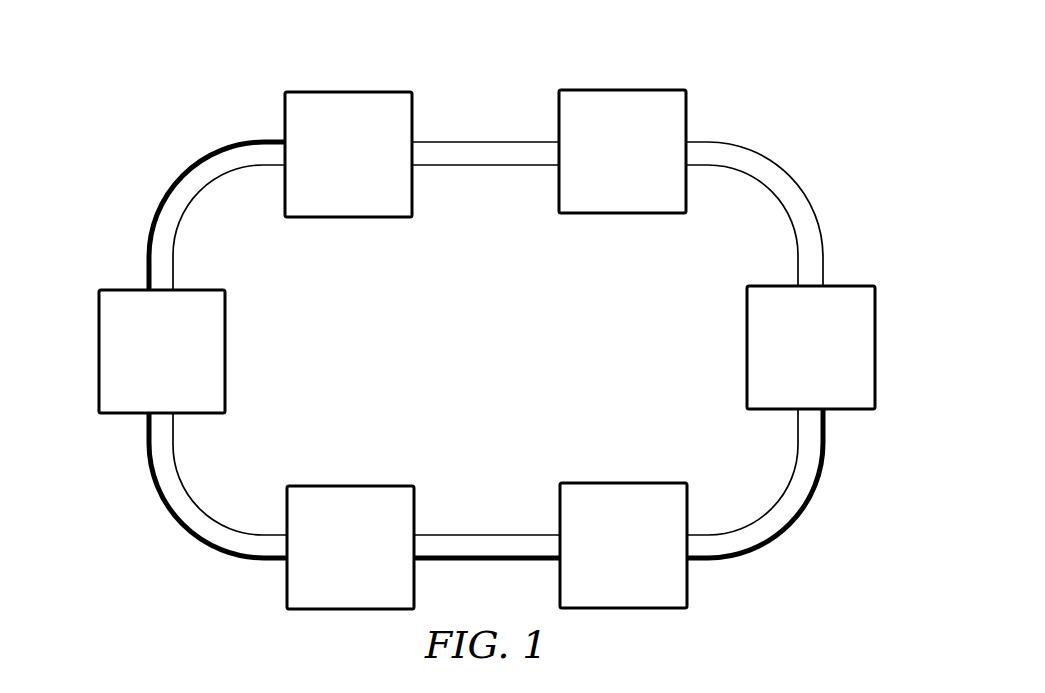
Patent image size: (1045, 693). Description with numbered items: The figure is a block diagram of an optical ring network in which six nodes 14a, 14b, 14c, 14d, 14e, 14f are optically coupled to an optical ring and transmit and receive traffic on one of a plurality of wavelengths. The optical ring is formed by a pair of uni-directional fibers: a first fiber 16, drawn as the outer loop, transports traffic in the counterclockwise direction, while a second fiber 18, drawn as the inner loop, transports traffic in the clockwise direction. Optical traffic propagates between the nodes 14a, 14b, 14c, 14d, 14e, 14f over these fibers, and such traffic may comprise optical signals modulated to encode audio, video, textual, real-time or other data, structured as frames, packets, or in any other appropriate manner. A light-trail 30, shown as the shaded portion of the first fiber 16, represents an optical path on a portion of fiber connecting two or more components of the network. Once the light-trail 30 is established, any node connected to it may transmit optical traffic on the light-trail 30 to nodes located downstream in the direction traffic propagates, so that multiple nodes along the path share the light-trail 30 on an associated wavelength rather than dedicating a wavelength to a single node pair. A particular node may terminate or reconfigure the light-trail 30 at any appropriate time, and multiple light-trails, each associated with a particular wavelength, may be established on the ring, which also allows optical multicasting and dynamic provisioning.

The node 14a is at (348, 90).
The node 14b is at (99, 352).
The node 14c is at (350, 611).
The node 14d is at (623, 610).
The node 14e is at (876, 345).
The node 14f is at (623, 88).
The first fiber 16 is at (157, 222).
The second fiber 18 is at (178, 237).
The light-trail 30 is at (774, 533).